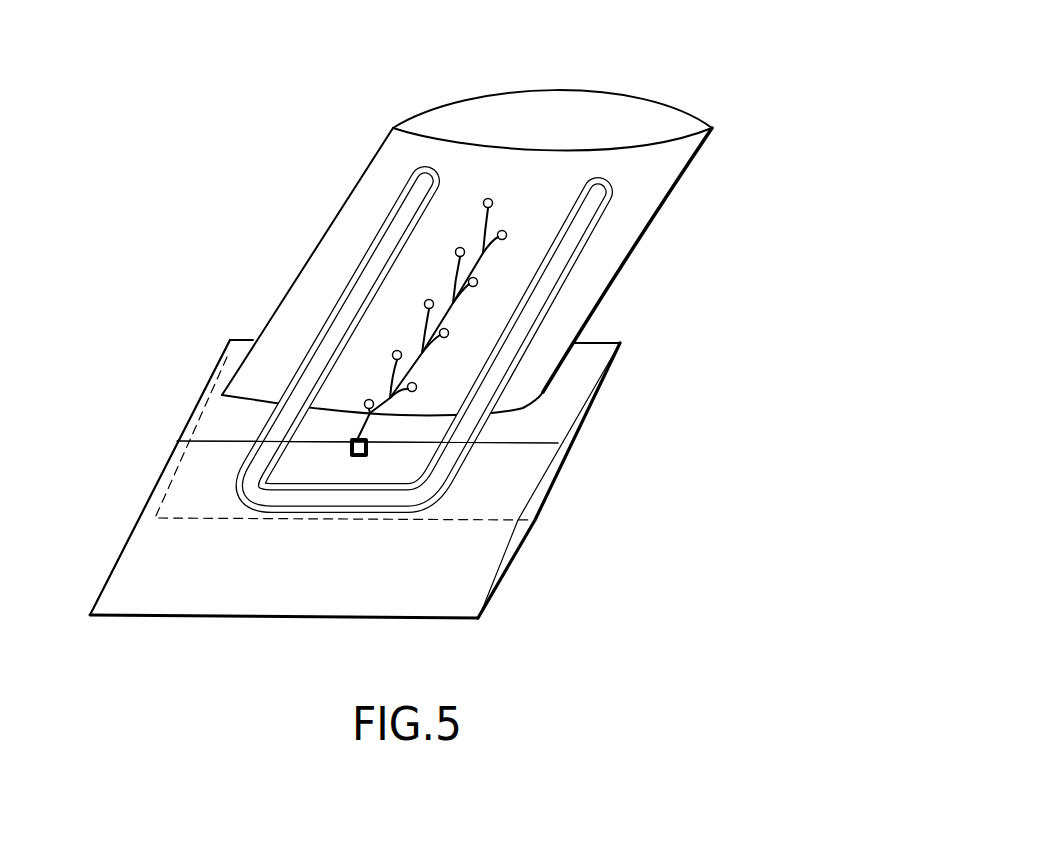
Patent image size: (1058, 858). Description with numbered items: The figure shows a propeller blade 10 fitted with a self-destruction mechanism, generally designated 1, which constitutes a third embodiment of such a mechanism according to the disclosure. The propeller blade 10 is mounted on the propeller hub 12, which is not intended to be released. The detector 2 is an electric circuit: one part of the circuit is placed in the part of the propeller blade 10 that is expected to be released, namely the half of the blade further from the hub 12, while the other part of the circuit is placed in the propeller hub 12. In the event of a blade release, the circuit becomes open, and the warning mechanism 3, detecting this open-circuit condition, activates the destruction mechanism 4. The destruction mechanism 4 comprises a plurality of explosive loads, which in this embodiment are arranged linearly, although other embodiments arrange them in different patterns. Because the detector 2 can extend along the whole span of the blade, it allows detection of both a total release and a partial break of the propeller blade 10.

The self-destruction mechanism 1 is at (366, 243).
The detector 2 is at (568, 270).
The warning mechanism 3 is at (368, 459).
The destruction mechanism 4 is at (486, 198).
The propeller blade 10 is at (697, 92).
The propeller hub 12 is at (537, 497).